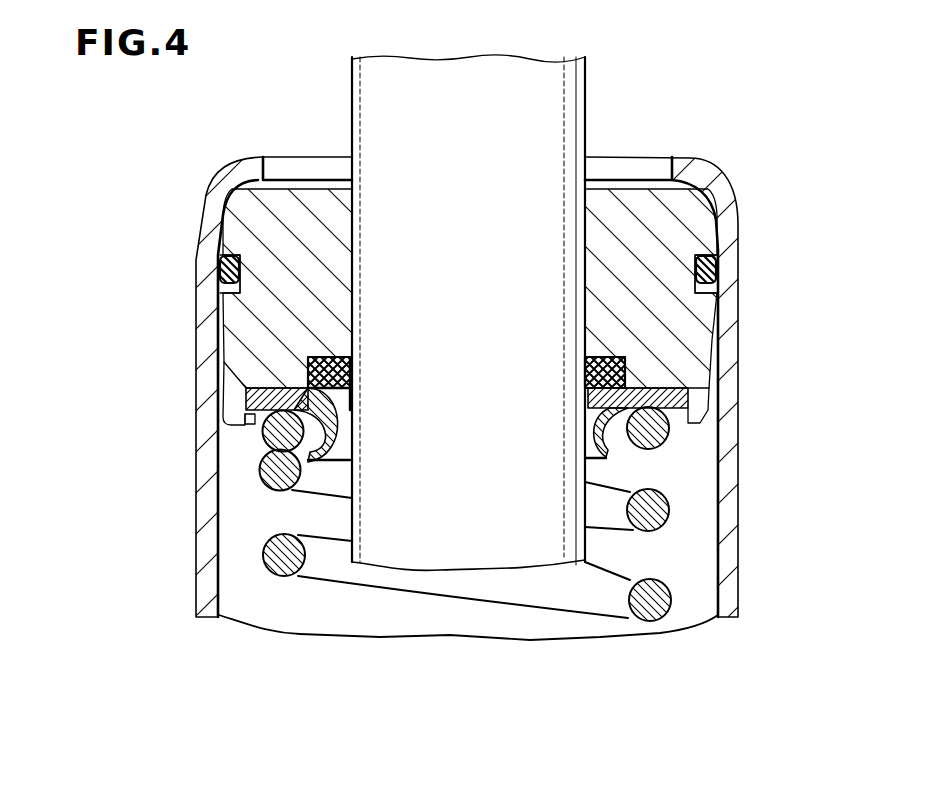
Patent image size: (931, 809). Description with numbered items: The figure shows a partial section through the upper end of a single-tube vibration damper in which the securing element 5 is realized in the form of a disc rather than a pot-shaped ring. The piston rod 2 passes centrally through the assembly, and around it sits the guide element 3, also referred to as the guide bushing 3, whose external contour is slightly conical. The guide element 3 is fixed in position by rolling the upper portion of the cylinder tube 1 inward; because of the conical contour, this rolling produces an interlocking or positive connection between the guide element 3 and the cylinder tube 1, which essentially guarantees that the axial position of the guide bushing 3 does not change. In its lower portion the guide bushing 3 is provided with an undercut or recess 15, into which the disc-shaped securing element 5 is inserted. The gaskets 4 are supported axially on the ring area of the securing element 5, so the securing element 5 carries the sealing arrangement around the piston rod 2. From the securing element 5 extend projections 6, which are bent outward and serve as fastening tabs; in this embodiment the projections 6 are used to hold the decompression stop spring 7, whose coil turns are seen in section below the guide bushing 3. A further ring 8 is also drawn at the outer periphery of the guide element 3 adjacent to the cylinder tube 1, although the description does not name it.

The cylinder tube 1 is at (708, 190).
The piston rod 2 is at (545, 118).
The guide element 3 is at (670, 248).
The gaskets 4 is at (610, 353).
The securing element 5 is at (680, 403).
The projections 6 is at (296, 450).
The decompression stop spring 7 is at (274, 560).
The sealing ring 8 is at (219, 268).
The recess 15 is at (245, 433).